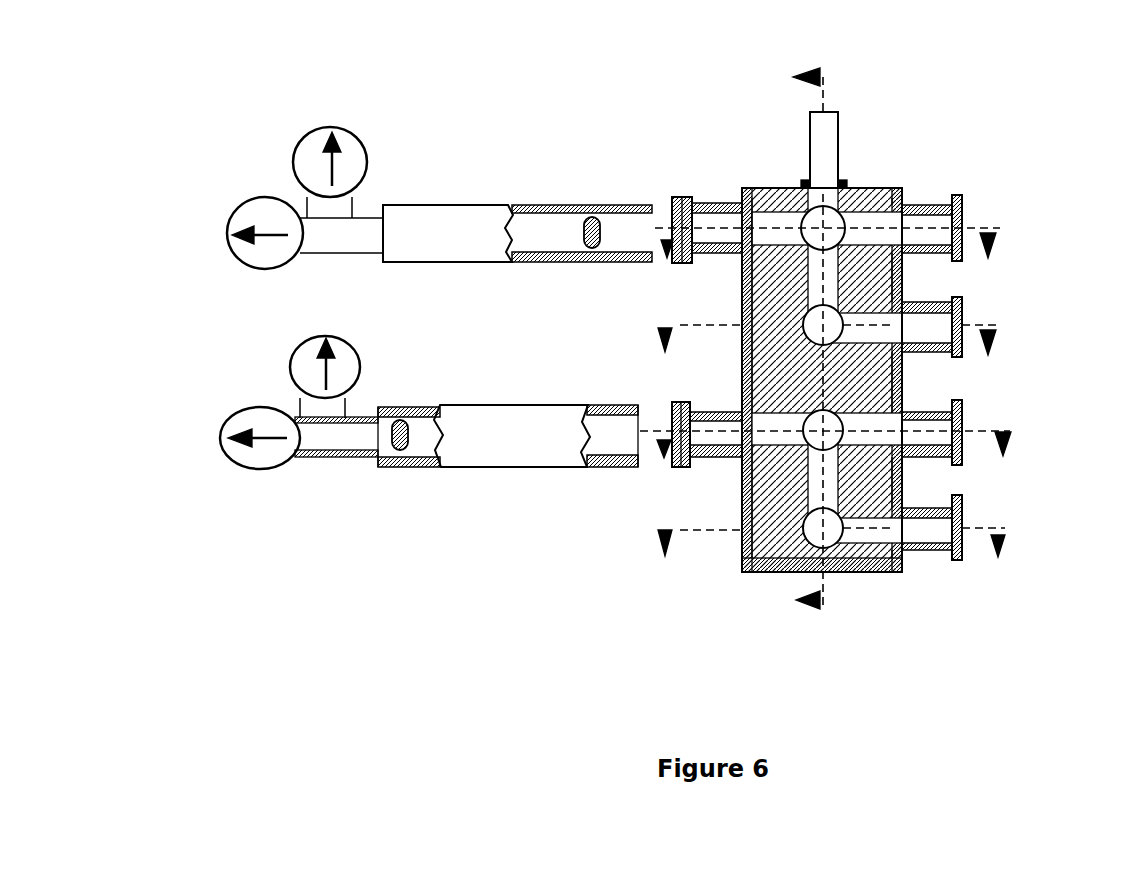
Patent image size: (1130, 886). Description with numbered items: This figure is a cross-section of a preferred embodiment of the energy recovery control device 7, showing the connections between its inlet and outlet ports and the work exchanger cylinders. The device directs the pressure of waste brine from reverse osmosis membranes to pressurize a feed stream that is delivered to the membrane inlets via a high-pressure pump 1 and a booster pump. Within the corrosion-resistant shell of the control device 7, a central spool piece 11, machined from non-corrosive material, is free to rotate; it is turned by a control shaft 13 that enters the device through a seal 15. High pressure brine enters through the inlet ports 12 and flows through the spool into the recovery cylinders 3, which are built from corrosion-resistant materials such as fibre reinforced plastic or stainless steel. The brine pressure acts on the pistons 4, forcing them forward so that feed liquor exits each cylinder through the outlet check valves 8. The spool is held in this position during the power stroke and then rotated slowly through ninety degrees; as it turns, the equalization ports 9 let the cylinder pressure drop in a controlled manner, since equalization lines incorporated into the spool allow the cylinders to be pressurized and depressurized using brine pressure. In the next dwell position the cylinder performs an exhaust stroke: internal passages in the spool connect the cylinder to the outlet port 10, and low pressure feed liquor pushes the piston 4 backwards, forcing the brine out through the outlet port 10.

The high-pressure pump 1 is at (735, 190).
The recovery cylinders 3 is at (452, 225).
The pistons 4 is at (580, 222).
The control device 7 is at (834, 237).
The outlet check valves 8 is at (368, 140).
The equalization ports 9 is at (834, 436).
The outlet port 10 is at (963, 315).
The central spool piece 11 is at (223, 417).
The inlet ports 12 is at (963, 215).
The control shaft 13 is at (838, 130).
The seal 15 is at (802, 180).